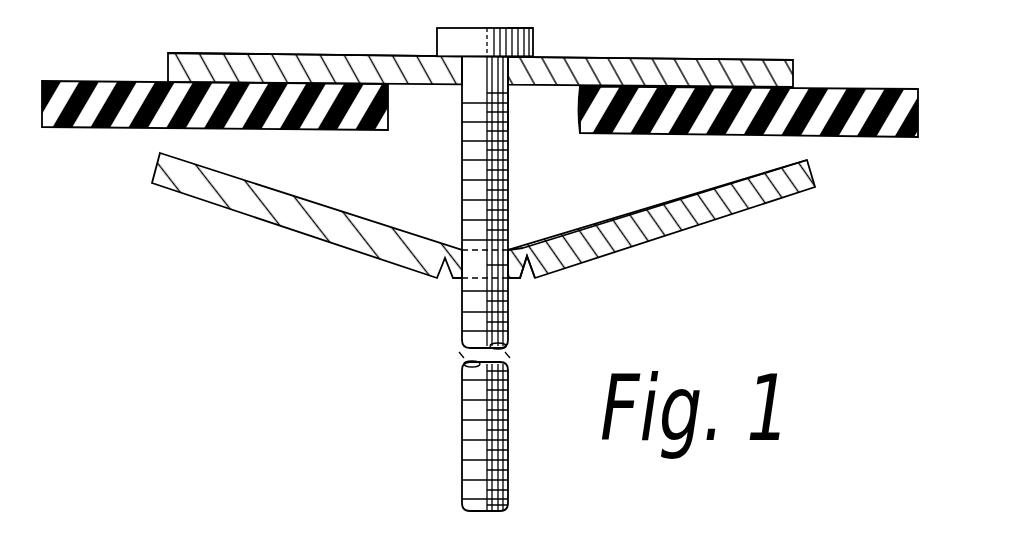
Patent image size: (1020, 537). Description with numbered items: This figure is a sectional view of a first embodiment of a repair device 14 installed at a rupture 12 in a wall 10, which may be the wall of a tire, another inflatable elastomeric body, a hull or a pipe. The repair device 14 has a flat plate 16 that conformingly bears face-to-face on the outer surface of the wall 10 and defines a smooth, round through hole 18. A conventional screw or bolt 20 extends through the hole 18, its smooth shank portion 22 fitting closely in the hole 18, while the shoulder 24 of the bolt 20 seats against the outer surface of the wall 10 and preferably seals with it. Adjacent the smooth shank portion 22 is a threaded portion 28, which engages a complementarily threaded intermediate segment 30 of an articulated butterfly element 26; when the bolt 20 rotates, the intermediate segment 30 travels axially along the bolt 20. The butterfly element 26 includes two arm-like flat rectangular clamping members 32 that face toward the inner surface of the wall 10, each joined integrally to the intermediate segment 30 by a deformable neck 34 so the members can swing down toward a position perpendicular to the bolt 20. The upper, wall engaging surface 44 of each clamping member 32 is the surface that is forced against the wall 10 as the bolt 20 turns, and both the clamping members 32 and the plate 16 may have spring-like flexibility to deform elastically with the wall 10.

The wall 10 is at (873, 88).
The rupture 12 is at (580, 106).
The repair device 14 is at (643, 50).
The flat plate 16 is at (747, 60).
The through hole 18 is at (462, 87).
The screw or bolt 20 is at (433, 35).
The smooth shank portion 22 is at (512, 90).
The shoulder 24 is at (530, 60).
The articulated butterfly element 26 is at (708, 228).
The threaded portion 28 is at (463, 170).
The intermediate segment 30 is at (512, 281).
The clamping members 32 is at (293, 215).
The deformable neck 34 is at (525, 248).
The wall engaging surface 44 is at (662, 205).